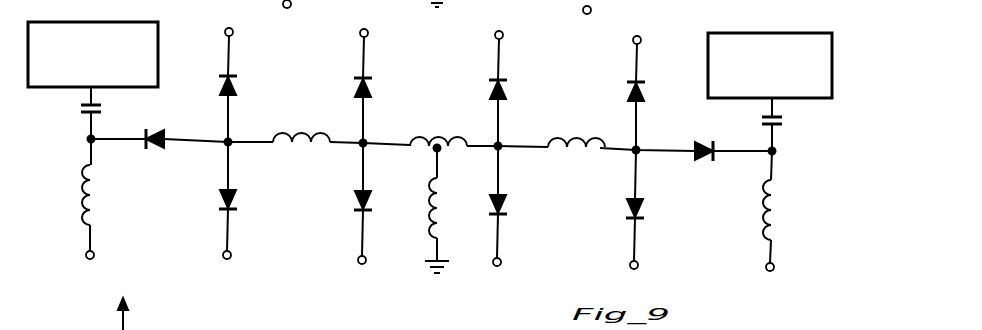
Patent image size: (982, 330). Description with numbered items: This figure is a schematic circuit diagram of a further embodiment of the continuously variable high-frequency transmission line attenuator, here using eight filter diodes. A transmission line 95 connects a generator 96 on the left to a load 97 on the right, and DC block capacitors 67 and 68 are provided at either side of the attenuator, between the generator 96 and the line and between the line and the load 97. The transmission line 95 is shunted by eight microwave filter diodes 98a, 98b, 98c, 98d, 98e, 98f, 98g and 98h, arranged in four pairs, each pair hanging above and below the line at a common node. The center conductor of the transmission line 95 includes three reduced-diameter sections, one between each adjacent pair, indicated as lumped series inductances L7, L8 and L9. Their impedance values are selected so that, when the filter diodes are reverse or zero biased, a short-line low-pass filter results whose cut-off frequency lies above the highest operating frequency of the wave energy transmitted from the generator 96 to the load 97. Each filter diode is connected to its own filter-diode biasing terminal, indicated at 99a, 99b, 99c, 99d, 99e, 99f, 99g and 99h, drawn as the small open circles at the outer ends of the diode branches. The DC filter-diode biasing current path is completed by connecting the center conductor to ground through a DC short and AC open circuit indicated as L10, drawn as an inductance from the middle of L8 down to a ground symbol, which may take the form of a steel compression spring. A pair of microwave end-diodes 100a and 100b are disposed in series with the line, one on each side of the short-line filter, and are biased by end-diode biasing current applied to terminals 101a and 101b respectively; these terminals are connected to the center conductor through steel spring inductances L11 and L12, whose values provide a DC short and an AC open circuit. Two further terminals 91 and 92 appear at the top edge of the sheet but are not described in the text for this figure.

The generator 96 is at (117, 22).
The DC block capacitor 67 is at (102, 111).
The transmission line 95 is at (104, 147).
The microwave end-diode 100a is at (161, 127).
The steel spring inductance L11 is at (96, 207).
The end-diode biasing terminal 101a is at (91, 259).
The filter-diode biasing terminal 99a is at (233, 36).
The microwave filter diode 98a is at (237, 91).
The microwave filter diode 98b is at (237, 213).
The filter-diode biasing terminal 99b is at (244, 237).
The lumped series inductance L7 is at (293, 134).
The filter-diode biasing terminal 99c is at (368, 37).
The microwave filter diode 98c is at (372, 93).
The microwave filter diode 98d is at (370, 215).
The filter-diode biasing terminal 99d is at (365, 264).
The lumped series inductance L8 is at (432, 137).
The DC short and AC open circuit L10 is at (443, 196).
The filter-diode biasing terminal 99e is at (503, 39).
The microwave filter diode 98e is at (507, 95).
The microwave filter diode 98f is at (505, 219).
The filter-diode biasing terminal 99f is at (500, 266).
The lumped series inductance L9 is at (568, 139).
The filter-diode biasing terminal 99g is at (641, 44).
The microwave filter diode 98g is at (645, 98).
The microwave filter diode 98h is at (643, 222).
The filter-diode biasing terminal 99h is at (637, 269).
The microwave end-diode 100b is at (702, 140).
The load 97 is at (793, 33).
The DC block capacitor 68 is at (783, 126).
The steel spring inductance L12 is at (777, 205).
The end-diode biasing terminal 101b is at (772, 271).
The terminal 91 is at (291, 7).
The terminal 92 is at (591, 13).